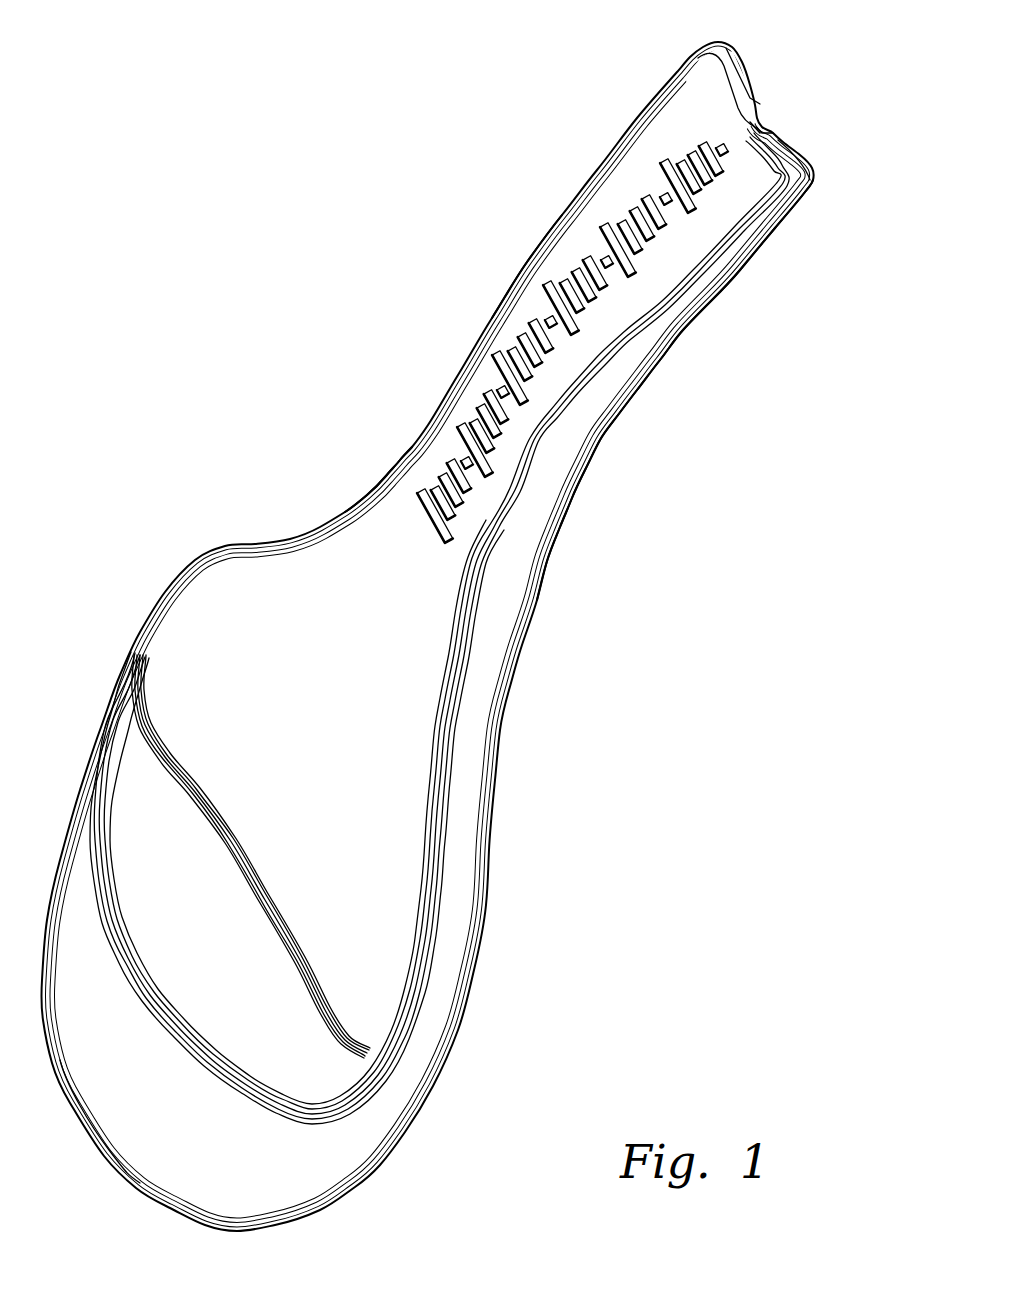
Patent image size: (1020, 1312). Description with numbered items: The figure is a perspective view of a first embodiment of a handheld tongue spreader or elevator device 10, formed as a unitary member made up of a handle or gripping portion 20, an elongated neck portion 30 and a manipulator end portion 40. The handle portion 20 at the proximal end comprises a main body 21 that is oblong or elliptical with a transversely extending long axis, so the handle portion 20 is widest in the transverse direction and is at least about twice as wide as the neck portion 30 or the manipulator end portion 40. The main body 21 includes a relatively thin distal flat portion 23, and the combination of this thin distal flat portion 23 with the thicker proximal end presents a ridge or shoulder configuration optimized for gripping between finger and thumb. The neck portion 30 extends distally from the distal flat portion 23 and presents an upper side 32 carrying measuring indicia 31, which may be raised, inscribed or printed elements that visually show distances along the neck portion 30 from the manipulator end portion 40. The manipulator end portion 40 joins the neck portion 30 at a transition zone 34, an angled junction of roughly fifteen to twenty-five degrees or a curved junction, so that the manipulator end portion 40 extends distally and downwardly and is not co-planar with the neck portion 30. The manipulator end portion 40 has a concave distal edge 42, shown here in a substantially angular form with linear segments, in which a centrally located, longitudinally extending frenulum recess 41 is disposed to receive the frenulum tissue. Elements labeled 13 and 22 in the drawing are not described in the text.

The tongue elevator device 10 is at (183, 388).
The handle end tip 13 is at (700, 78).
The handle portion 20 is at (548, 952).
The main body 21 is at (385, 1122).
The outer rim 22 is at (128, 1137).
The distal flat portion 23 is at (353, 730).
The neck portion 30 is at (672, 407).
The measuring indicia 31 is at (455, 520).
The upper side 32 is at (387, 530).
The transition zone 34 is at (510, 303).
The manipulator end portion 40 is at (612, 70).
The frenulum recess 41 is at (753, 128).
The concave distal edge 42 is at (800, 153).